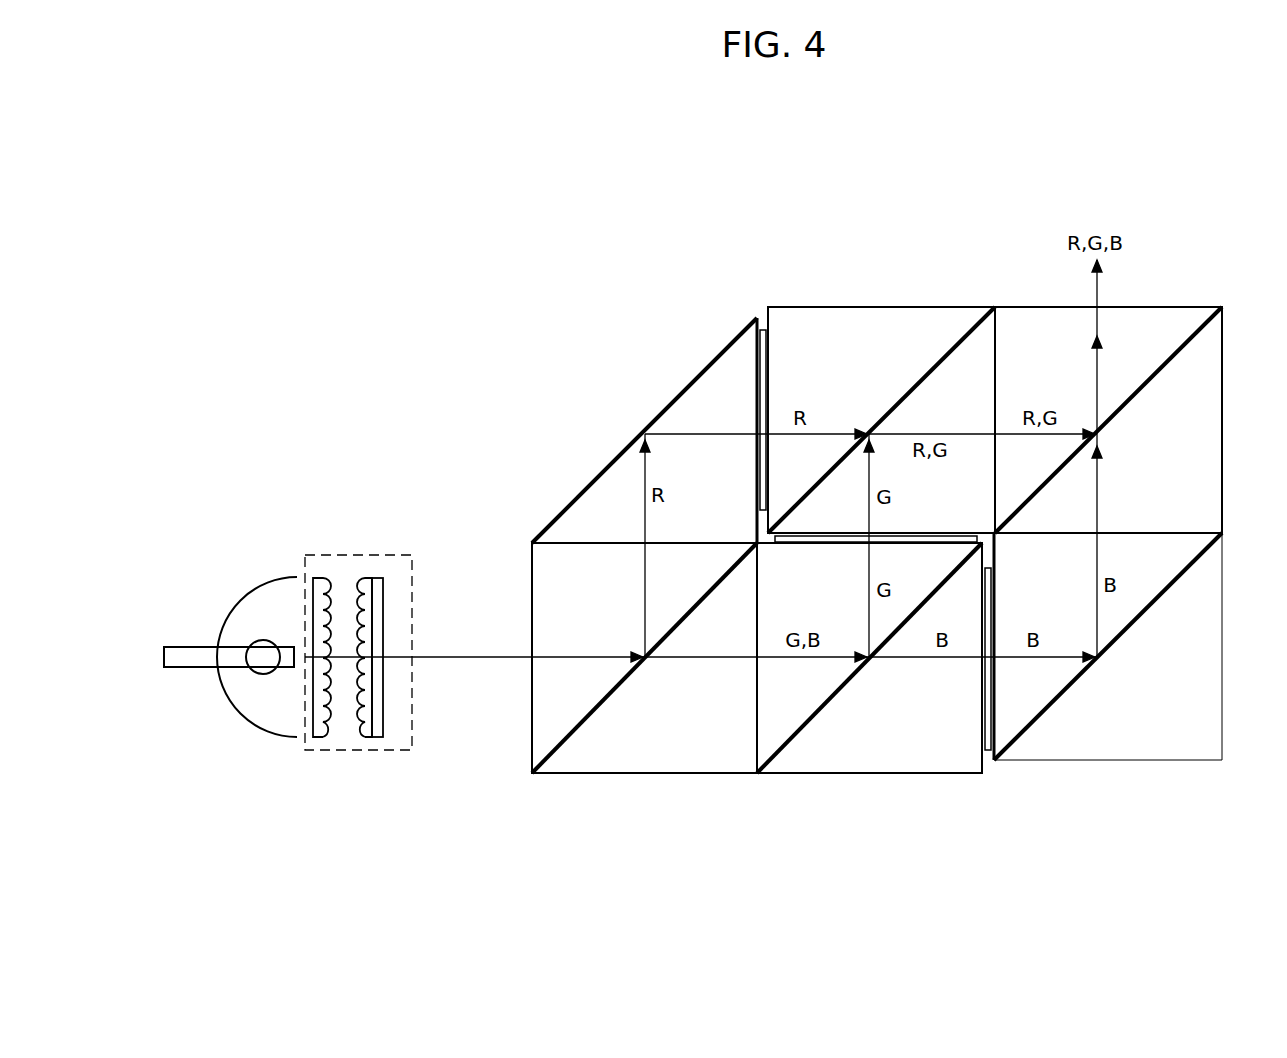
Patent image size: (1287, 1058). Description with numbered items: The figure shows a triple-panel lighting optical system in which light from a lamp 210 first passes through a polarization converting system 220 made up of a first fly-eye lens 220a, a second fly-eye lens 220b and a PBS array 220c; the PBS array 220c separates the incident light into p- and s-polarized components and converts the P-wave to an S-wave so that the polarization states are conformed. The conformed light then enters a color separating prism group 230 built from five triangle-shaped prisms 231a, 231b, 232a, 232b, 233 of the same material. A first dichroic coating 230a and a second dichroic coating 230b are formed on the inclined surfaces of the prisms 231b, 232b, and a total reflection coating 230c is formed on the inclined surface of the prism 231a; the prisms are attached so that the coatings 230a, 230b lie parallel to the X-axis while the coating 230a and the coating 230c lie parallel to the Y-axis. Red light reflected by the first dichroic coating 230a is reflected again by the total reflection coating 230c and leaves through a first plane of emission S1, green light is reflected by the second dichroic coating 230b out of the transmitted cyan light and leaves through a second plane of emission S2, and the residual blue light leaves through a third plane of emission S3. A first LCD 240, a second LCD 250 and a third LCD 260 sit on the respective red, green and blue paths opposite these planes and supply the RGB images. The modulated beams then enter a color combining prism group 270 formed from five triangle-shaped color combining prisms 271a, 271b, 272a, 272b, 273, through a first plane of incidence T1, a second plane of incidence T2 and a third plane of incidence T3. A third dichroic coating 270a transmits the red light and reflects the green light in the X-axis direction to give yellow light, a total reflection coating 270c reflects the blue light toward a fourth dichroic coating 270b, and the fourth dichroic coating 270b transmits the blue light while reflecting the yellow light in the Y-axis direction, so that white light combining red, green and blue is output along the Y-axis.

The lamp 210 is at (230, 706).
The polarization converting system 220 is at (394, 615).
The first fly-eye lens 220a is at (322, 579).
The second fly-eye lens 220b is at (366, 580).
The PBS array 220c is at (378, 585).
The color separating prism group 230 is at (731, 615).
The first dichroic coating 230a is at (675, 626).
The second dichroic coating 230b is at (815, 712).
The total reflection coating 230c is at (607, 470).
The triangle-shaped prism 231a is at (565, 511).
The triangle-shaped prism 231b is at (553, 722).
The triangle-shaped prism 232a is at (655, 748).
The triangle-shaped prism 232b is at (777, 730).
The third color separating prism 233 is at (868, 699).
The first LCD 240 is at (763, 328).
The second LCD 250 is at (924, 536).
The third LCD 260 is at (989, 752).
The color combining prism group 270 is at (1006, 453).
The third dichroic coating 270a is at (943, 360).
The fourth dichroic coating 270b is at (1023, 504).
The total reflection coating 270c is at (1150, 605).
The first color combining prism 271a is at (1190, 380).
The second color combining prism 271b is at (1170, 566).
The third color combining prism 272a is at (972, 338).
The fourth color combining prism 272b is at (1043, 333).
The fifth color combining prism 273 is at (917, 333).
The first plane of incidence T1 is at (769, 376).
The second plane of incidence T2 is at (842, 535).
The third plane of incidence T3 is at (994, 574).
The first plane of emission S1 is at (758, 452).
The second plane of emission S2 is at (818, 548).
The third plane of emission S3 is at (982, 702).